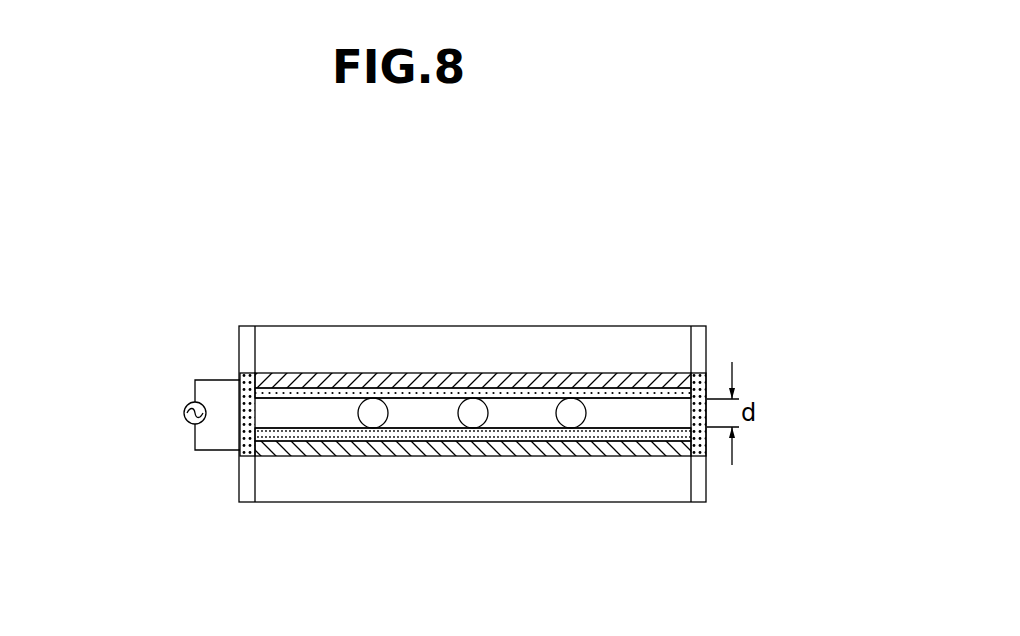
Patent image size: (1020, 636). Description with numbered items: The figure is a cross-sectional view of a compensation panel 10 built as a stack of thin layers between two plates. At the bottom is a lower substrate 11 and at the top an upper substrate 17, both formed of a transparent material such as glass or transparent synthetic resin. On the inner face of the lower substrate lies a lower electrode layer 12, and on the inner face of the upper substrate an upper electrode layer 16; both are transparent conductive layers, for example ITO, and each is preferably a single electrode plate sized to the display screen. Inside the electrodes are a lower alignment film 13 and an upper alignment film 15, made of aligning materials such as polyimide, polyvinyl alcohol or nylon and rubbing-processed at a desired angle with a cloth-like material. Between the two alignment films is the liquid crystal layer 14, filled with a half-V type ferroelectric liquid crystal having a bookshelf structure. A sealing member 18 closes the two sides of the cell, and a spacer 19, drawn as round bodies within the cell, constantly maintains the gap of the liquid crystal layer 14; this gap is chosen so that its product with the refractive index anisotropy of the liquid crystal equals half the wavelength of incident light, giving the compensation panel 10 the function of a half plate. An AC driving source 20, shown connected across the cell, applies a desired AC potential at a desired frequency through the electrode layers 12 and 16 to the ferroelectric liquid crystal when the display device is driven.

The compensation panel 10 is at (229, 304).
The lower substrate 11 is at (378, 478).
The lower electrode layer 12 is at (607, 451).
The lower alignment film 13 is at (504, 432).
The liquid crystal layer 14 is at (335, 425).
The upper alignment film 15 is at (640, 390).
The upper electrode layer 16 is at (557, 392).
The upper substrate 17 is at (468, 353).
The sealing member 18 is at (243, 433).
The spacer 19 is at (373, 398).
The AC driving source 20 is at (184, 408).